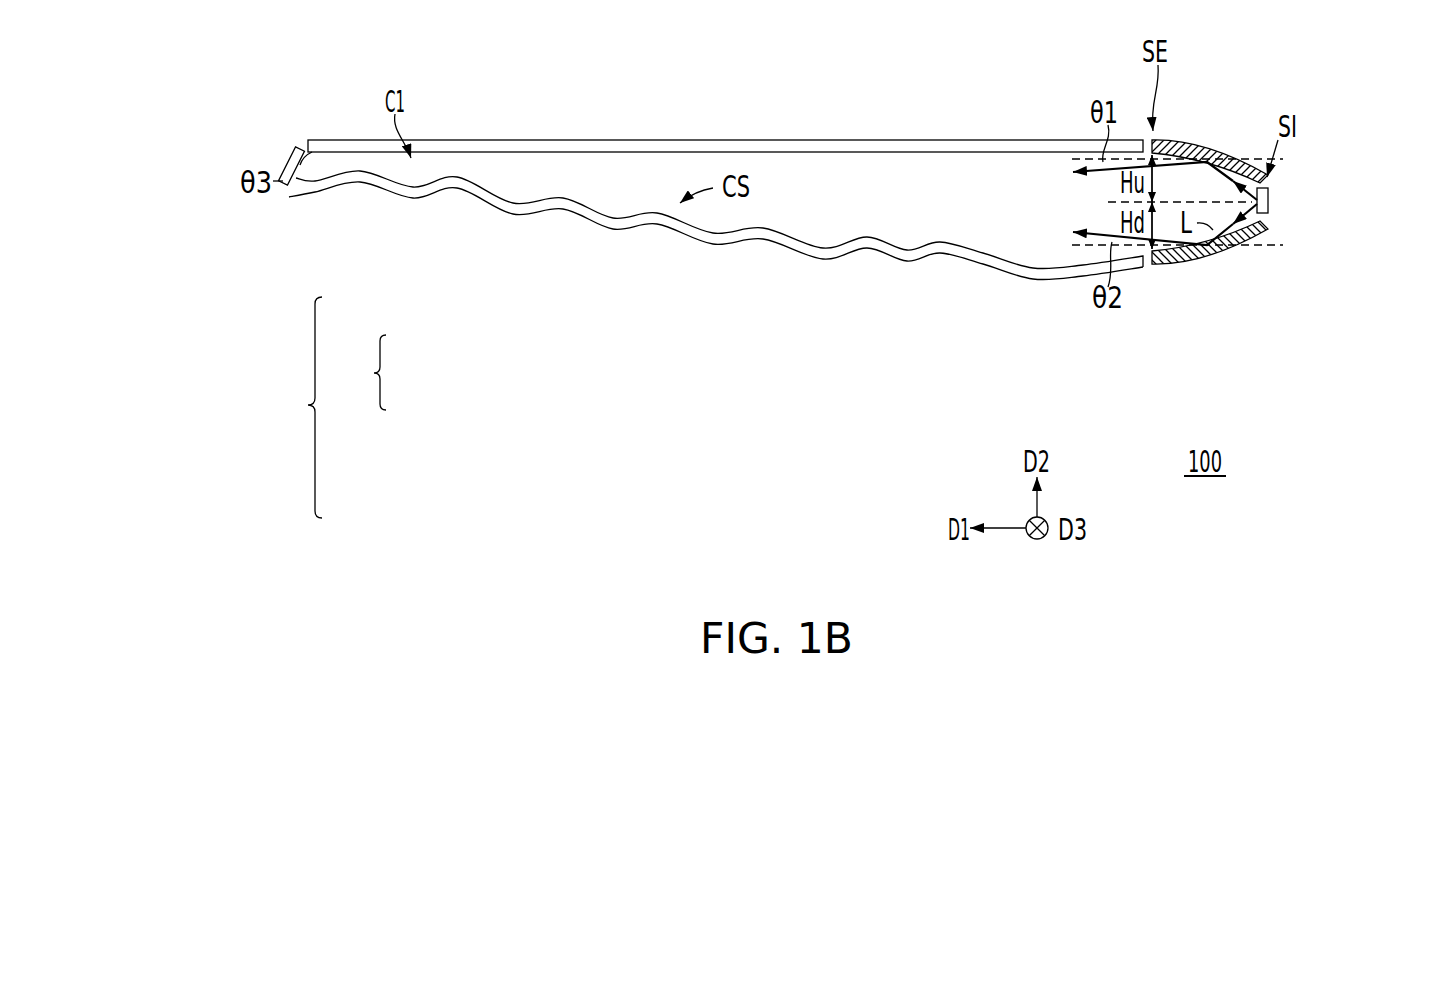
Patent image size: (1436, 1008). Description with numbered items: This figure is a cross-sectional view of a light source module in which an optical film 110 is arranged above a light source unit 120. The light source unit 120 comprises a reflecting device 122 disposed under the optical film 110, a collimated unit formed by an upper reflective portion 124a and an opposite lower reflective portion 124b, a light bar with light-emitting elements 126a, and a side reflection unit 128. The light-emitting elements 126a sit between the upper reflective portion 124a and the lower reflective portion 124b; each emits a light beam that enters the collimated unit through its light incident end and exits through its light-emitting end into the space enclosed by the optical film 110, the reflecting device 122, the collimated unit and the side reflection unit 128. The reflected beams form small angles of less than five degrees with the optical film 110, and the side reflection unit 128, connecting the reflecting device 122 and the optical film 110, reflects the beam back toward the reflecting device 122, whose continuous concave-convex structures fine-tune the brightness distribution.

The optical film 110 is at (1073, 143).
The light source unit 120 is at (349, 408).
The reflecting device 122 is at (825, 250).
The upper reflective portion 124a is at (1237, 163).
The lower reflective portion 124b is at (1235, 247).
The light-emitting element 126a is at (1268, 203).
The side reflection unit 128 is at (292, 160).